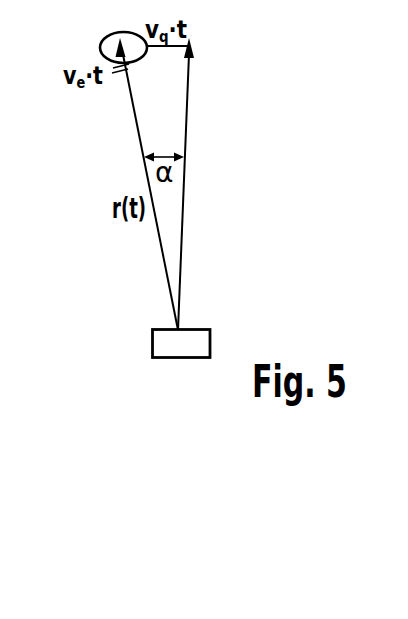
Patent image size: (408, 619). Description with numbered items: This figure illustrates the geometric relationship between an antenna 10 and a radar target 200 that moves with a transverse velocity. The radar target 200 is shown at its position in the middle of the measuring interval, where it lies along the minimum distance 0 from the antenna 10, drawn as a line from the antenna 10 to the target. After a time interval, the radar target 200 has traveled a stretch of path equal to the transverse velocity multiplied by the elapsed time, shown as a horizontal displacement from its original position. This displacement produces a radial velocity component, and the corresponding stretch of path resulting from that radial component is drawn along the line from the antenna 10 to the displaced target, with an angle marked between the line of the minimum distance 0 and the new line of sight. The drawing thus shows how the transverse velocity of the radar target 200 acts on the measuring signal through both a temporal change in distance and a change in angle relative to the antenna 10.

The radar target 200 is at (100, 43).
The antenna 10 is at (152, 340).
The reference distance r0 to object 0 is at (196, 184).